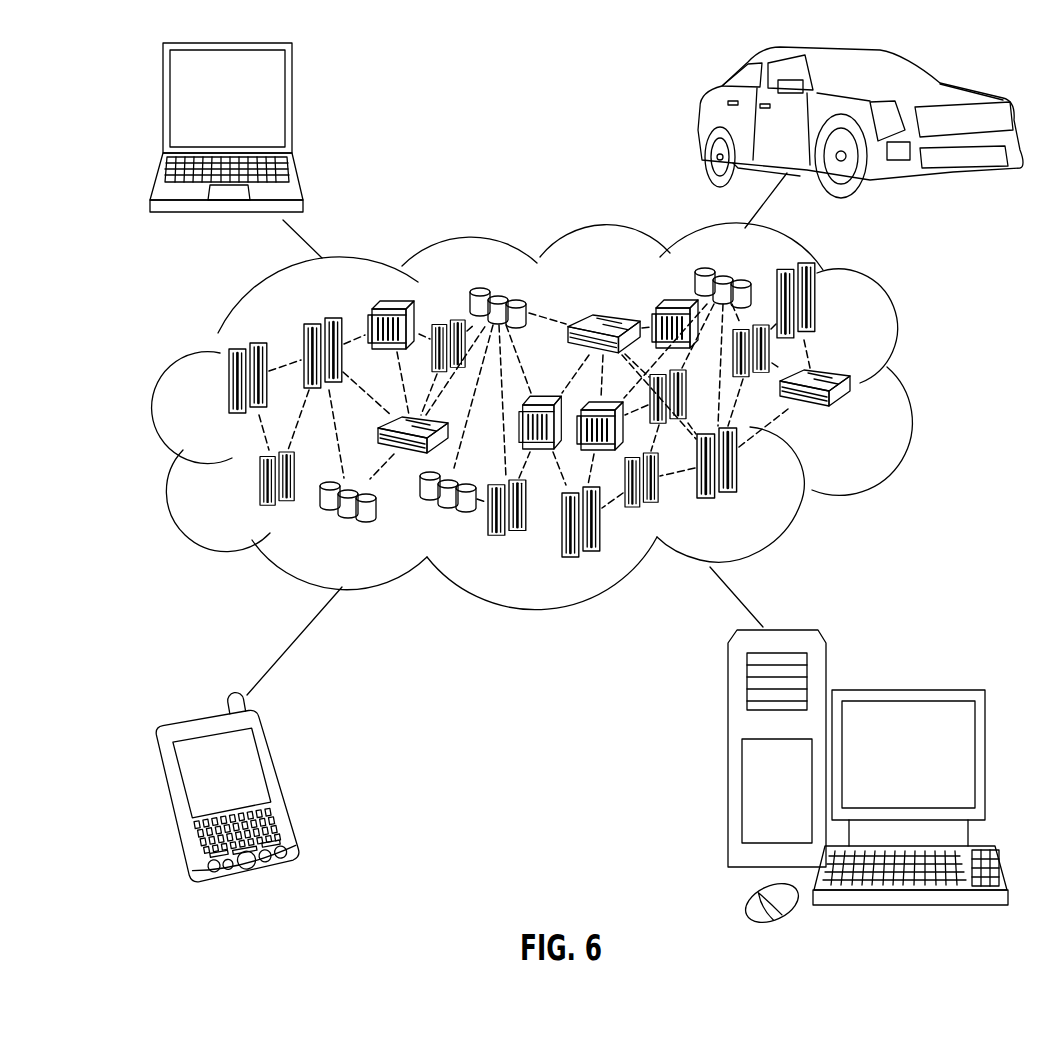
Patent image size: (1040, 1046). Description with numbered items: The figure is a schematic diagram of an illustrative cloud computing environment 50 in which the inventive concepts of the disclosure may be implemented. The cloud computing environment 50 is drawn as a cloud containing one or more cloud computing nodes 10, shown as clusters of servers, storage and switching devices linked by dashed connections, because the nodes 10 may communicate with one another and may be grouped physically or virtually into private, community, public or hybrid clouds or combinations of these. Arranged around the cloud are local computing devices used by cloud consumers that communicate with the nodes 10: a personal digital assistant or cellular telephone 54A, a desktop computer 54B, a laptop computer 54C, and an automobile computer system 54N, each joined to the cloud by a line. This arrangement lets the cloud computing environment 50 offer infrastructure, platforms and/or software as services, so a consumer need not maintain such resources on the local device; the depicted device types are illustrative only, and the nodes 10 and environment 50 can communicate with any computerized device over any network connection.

The cloud computing node 10 is at (858, 431).
The cloud computing environment 50 is at (908, 389).
The personal digital assistant or cellular telephone 54A is at (290, 780).
The desktop computer 54B is at (905, 688).
The laptop computer 54C is at (296, 104).
The automobile computer system 54N is at (702, 120).